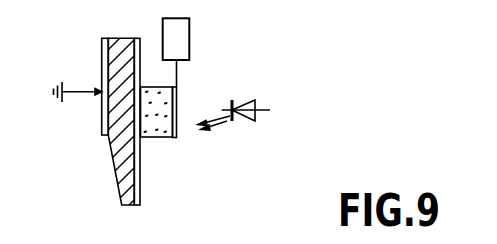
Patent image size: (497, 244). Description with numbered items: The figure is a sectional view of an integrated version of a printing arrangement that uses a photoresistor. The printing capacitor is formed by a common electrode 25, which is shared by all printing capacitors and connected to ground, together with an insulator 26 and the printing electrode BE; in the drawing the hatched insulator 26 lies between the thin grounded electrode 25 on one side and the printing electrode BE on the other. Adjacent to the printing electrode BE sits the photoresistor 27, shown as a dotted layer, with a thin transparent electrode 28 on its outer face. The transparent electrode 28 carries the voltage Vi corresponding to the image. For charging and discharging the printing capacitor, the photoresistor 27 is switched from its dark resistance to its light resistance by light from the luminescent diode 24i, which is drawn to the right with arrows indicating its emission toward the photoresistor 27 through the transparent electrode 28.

The electrode 25 is at (104, 135).
The insulator 26 is at (120, 133).
The photoresistor 27 is at (155, 137).
The transparent electrode 28 is at (177, 90).
The printing electrode BE is at (138, 197).
The luminescent diode 24i is at (247, 123).
The voltage Vi is at (189, 37).